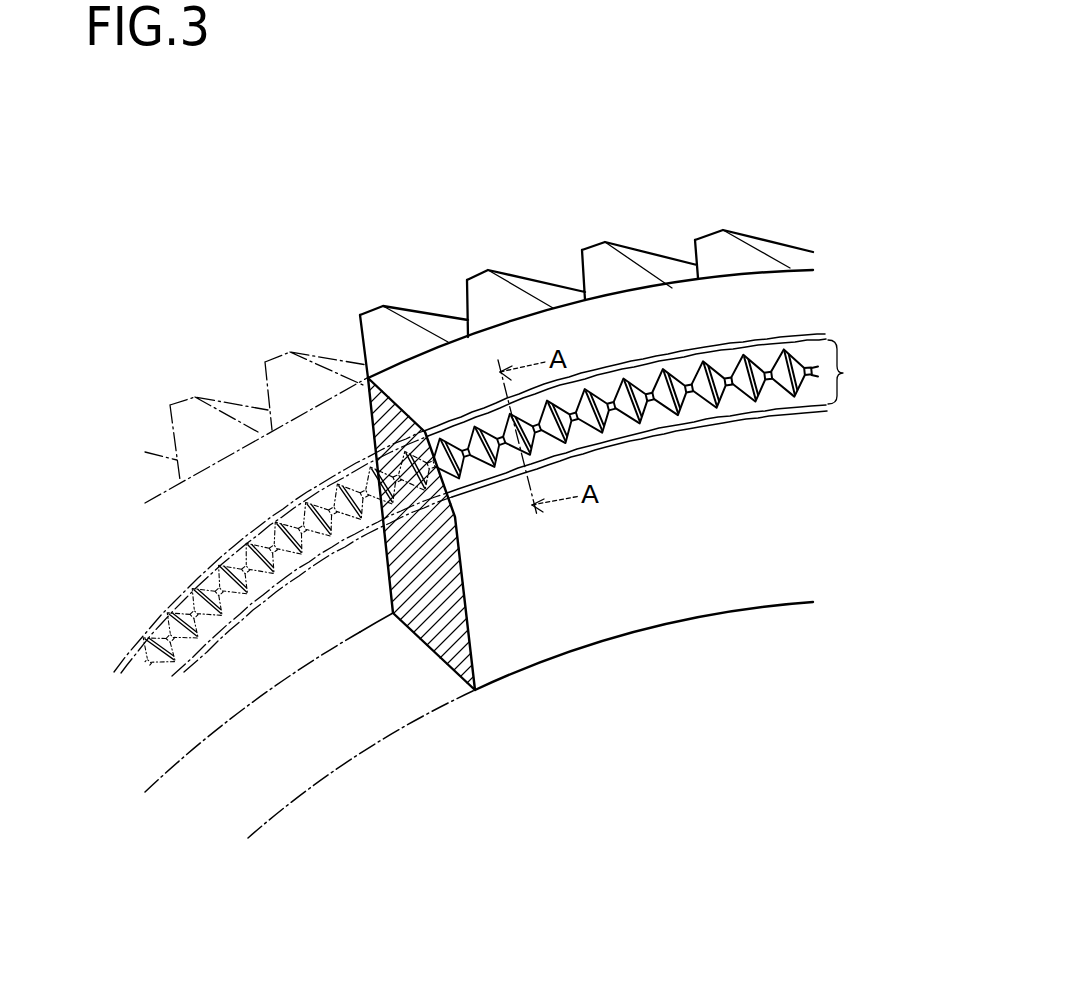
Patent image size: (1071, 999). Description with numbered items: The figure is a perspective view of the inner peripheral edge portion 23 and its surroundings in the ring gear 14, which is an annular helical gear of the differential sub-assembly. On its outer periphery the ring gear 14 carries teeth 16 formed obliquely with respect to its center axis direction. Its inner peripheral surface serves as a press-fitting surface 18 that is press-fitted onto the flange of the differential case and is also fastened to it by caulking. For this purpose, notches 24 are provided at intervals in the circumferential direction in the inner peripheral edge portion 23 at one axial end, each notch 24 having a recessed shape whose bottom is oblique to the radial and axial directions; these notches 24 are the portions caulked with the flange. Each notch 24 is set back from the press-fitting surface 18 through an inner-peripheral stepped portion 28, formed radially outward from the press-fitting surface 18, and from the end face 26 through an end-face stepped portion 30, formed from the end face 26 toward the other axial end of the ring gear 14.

The ring gear 14 is at (733, 158).
The teeth 16 is at (487, 293).
The press-fitting surface 18 is at (593, 622).
The inner peripheral edge portion 23 is at (850, 372).
The notches 24 is at (703, 390).
The end face 26 is at (644, 312).
The inner-peripheral stepped portion 28 is at (745, 416).
The end-face stepped portion 30 is at (742, 343).